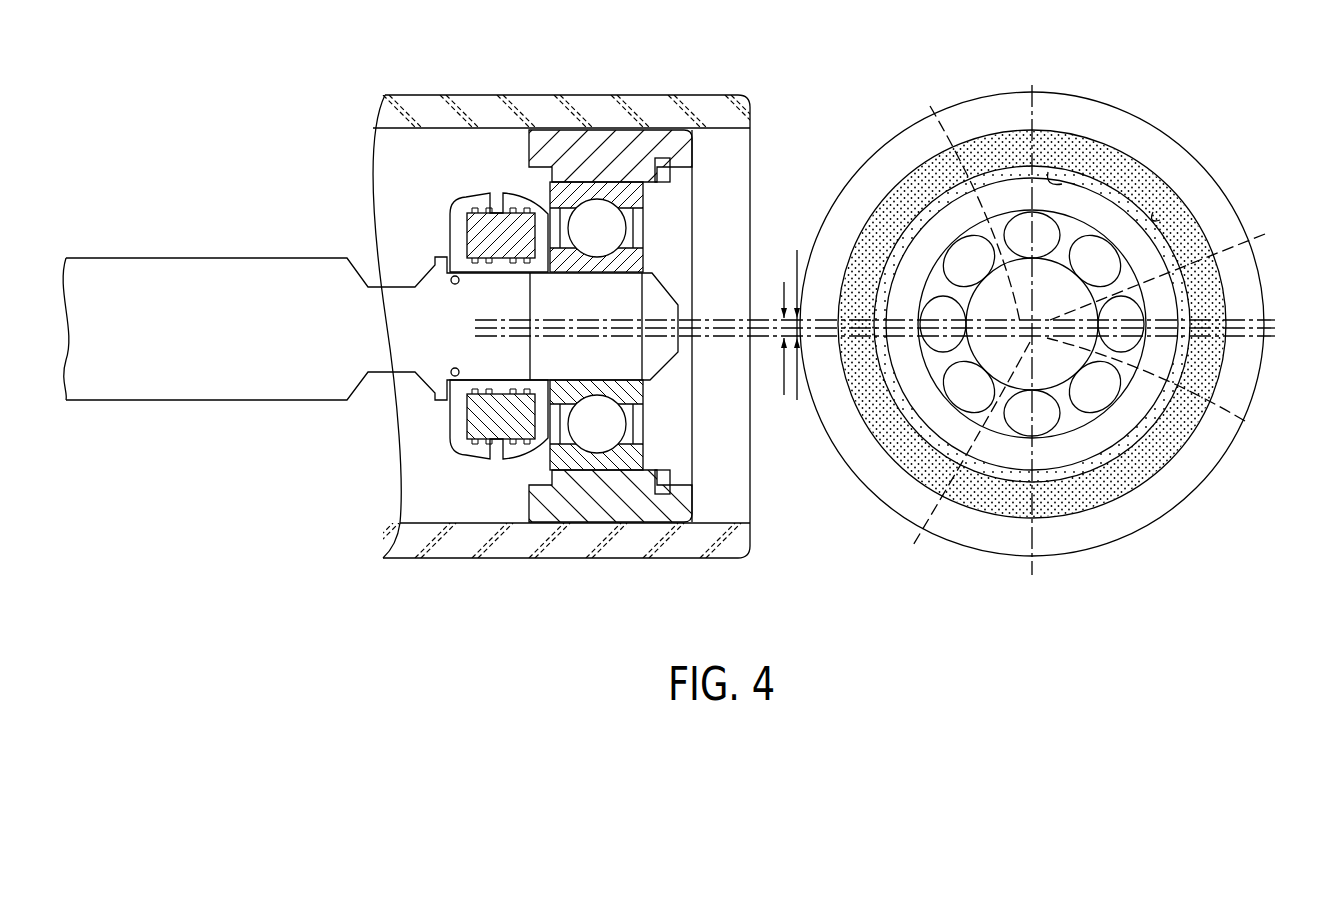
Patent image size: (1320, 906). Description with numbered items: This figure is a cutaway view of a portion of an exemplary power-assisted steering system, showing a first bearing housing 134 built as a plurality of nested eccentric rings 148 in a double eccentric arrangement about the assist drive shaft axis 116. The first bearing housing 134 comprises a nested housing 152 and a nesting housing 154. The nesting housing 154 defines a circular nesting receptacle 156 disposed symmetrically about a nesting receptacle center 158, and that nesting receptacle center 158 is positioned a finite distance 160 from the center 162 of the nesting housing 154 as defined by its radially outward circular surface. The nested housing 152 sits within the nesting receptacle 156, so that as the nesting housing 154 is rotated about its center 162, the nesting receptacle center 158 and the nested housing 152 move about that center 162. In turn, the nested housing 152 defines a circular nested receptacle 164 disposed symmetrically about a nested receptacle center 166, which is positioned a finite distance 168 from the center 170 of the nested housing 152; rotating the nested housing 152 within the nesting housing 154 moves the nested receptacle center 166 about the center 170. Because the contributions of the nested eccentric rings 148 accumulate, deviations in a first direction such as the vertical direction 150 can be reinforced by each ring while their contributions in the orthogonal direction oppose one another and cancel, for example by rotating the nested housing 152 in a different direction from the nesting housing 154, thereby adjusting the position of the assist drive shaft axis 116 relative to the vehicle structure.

The assist drive shaft axis 116 is at (726, 316).
The first bearing housing 134 is at (1187, 445).
The eccentric ring 148 is at (1100, 430).
The vertical direction 150 is at (784, 395).
The nested housing 152 is at (1110, 190).
The nesting housing 154 is at (1200, 223).
The nesting receptacle 156 is at (1153, 212).
The nesting receptacle center 158 is at (1245, 421).
The finite distance 160 is at (784, 282).
The center of the nesting housing 162 is at (930, 106).
The nested receptacle 164 is at (1048, 172).
The nested receptacle center 166 is at (1265, 234).
The finite distance 168 is at (797, 250).
The center of the nested housing 170 is at (967, 458).